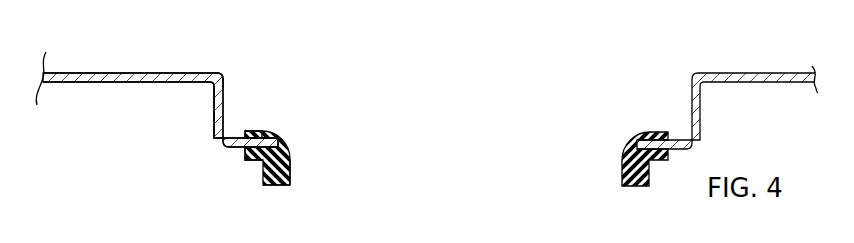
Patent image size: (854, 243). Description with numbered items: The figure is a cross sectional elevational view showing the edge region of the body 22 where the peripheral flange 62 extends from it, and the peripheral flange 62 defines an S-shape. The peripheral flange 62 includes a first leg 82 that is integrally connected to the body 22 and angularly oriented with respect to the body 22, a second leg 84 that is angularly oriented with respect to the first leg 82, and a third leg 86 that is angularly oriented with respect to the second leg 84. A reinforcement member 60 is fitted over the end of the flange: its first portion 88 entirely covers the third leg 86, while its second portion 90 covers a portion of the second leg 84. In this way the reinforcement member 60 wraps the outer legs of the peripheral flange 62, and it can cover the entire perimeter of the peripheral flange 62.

The body 22 is at (117, 73).
The peripheral flange 62 is at (234, 89).
The first leg 82 is at (213, 103).
The second leg 84 is at (253, 140).
The reinforcement member 60 is at (301, 160).
The third leg 86 is at (280, 167).
The first portion 88 is at (277, 186).
The second portion 90 is at (250, 160).